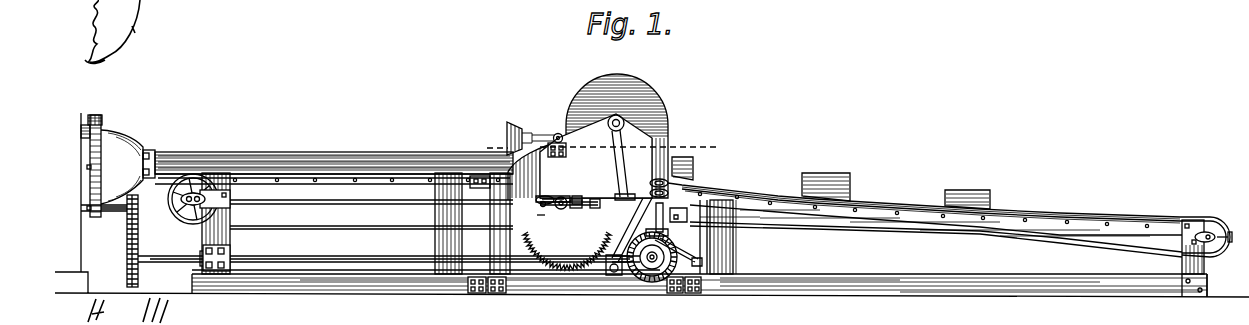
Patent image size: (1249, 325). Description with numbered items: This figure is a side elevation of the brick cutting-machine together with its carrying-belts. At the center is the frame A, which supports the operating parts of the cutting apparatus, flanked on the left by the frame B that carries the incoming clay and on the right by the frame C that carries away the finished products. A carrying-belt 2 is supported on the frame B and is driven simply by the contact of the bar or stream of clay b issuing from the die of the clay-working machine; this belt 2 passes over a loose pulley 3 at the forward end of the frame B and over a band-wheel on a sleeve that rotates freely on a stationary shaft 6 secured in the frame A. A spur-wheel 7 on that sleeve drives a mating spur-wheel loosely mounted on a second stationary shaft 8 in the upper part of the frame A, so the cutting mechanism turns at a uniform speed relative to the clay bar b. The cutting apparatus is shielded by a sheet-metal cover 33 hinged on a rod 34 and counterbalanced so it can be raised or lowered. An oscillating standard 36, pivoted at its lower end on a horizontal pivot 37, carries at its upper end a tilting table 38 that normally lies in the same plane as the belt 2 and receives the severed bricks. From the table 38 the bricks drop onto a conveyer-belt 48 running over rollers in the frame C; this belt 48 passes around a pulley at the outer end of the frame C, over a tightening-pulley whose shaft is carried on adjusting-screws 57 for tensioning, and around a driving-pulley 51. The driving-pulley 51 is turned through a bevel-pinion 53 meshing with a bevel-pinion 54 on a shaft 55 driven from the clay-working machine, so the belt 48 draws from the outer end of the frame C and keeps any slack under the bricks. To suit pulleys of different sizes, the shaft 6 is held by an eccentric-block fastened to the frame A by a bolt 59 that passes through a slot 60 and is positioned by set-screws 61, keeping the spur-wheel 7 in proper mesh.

The carrying-belt 2 is at (295, 176).
The loose pulley 3 is at (193, 225).
The stationary shaft 6 is at (601, 146).
The spur-wheel 7 is at (567, 248).
The stationary shaft 8 is at (625, 124).
The cover 33 is at (660, 101).
The rod 34 is at (557, 134).
The oscillating standard 36 is at (624, 236).
The horizontal pivot 37 is at (620, 272).
The table 38 is at (519, 135).
The conveyer-belt 48 is at (786, 196).
The driving-pulley 51 is at (548, 216).
The bevel-pinion 53 is at (672, 256).
The bevel-pinion 54 is at (643, 282).
The shaft 55 is at (302, 256).
The adjusting-screws 57 is at (648, 233).
The bolt 59 is at (568, 200).
The slot 60 is at (578, 207).
The set-screws 61 is at (582, 203).
The frame A is at (539, 225).
The frame B is at (367, 198).
The bar or stream of clay b is at (377, 164).
The frame C is at (865, 218).